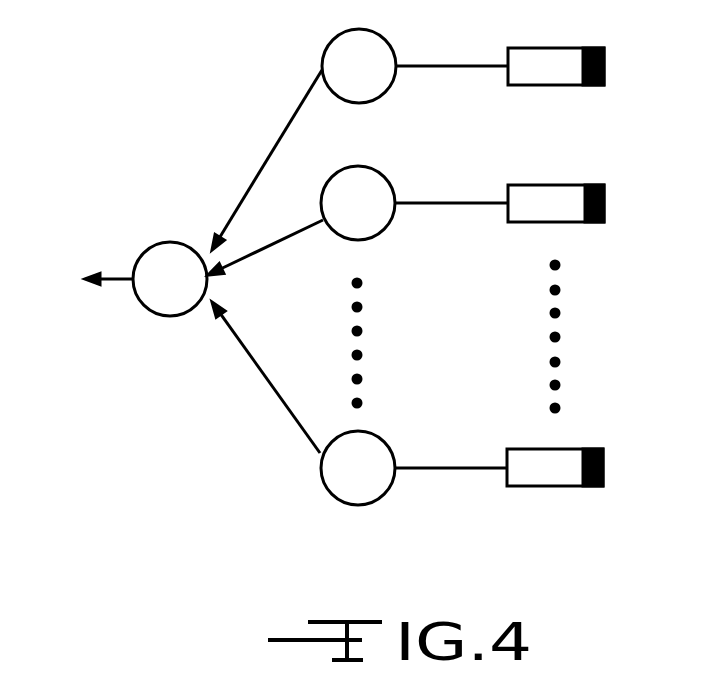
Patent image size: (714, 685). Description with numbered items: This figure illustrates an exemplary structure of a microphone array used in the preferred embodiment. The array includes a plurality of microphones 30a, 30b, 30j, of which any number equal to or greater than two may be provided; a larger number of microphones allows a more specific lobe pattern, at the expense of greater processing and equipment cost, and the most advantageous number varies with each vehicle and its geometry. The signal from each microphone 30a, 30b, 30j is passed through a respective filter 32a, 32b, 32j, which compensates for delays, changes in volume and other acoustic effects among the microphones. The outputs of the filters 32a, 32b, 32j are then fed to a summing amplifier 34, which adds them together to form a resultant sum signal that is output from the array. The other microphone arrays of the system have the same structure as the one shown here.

The microphone 30a is at (556, 85).
The microphone 30b is at (556, 221).
The microphone 30j is at (555, 481).
The filter 32a is at (360, 125).
The filter 32b is at (358, 221).
The filter 32j is at (359, 418).
The summing amplifier 34 is at (170, 243).